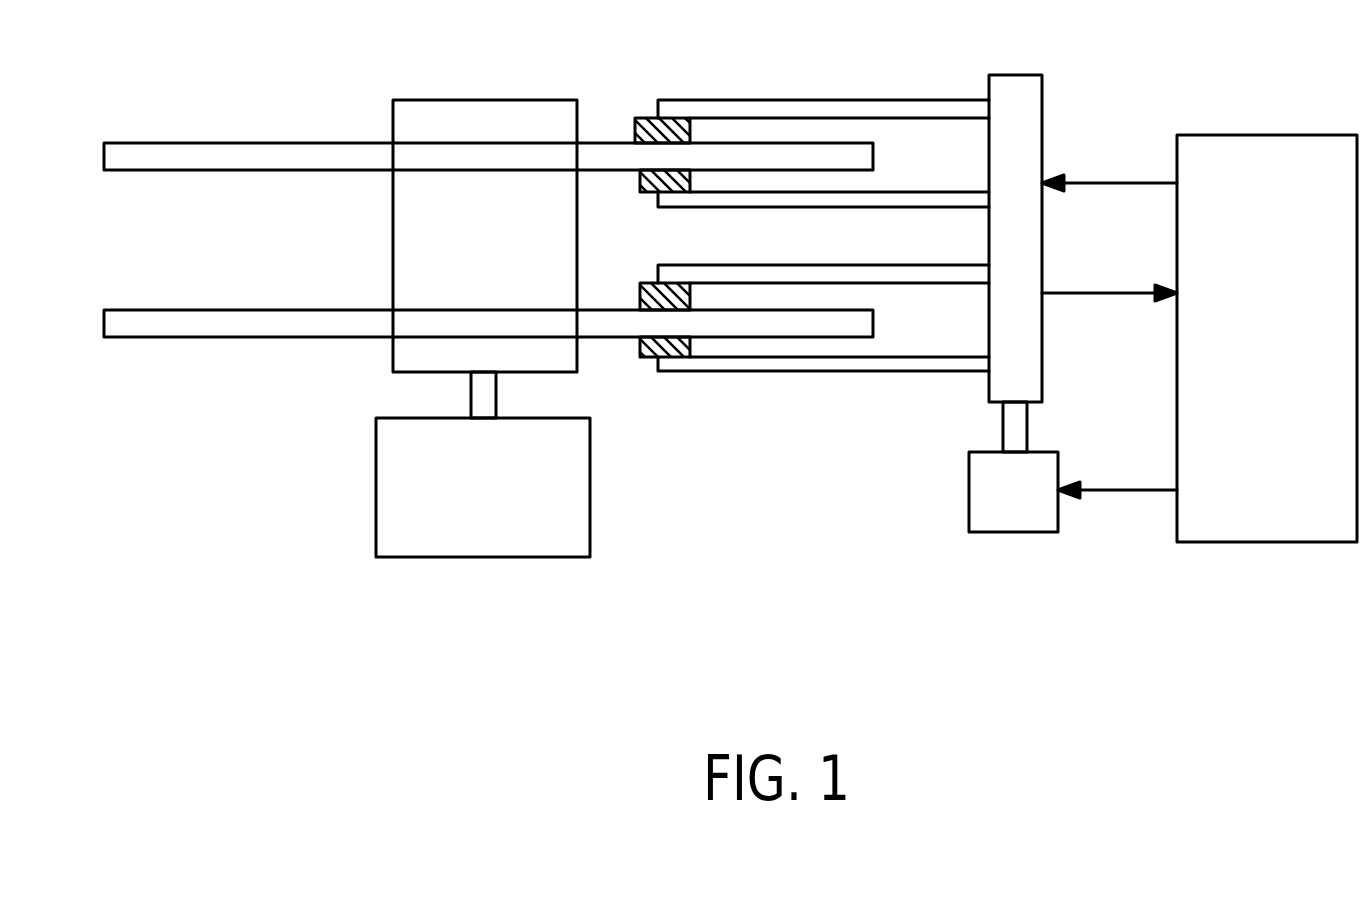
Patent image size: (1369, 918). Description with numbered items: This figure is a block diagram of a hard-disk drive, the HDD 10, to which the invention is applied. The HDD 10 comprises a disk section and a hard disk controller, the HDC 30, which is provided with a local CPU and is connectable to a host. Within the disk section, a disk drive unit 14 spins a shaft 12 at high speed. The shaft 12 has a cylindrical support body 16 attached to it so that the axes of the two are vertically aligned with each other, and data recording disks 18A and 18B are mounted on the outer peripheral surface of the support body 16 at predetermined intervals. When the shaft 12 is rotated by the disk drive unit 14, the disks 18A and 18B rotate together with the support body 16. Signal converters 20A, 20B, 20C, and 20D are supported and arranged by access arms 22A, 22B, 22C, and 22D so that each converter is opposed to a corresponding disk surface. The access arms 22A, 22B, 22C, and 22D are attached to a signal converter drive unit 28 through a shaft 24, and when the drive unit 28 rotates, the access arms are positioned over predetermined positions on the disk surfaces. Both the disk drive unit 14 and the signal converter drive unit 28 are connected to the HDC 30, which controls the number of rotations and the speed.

The hard-disk drive 10 is at (313, 100).
The shaft 12 is at (469, 404).
The disk drive unit 14 is at (496, 509).
The cylindrical support body 16 is at (496, 98).
The data recording disk 18A is at (203, 140).
The data recording disk 18B is at (205, 339).
The signal converter 20A is at (638, 117).
The signal converter 20B is at (640, 183).
The signal converter 20C is at (640, 293).
The signal converter 20D is at (640, 358).
The access arm 22A is at (803, 99).
The access arm 22B is at (797, 209).
The access arm 22C is at (798, 263).
The access arm 22D is at (817, 373).
The shaft 24 is at (1043, 101).
The signal converter drive unit 28 is at (968, 490).
The hard disk controller 30 is at (1282, 401).